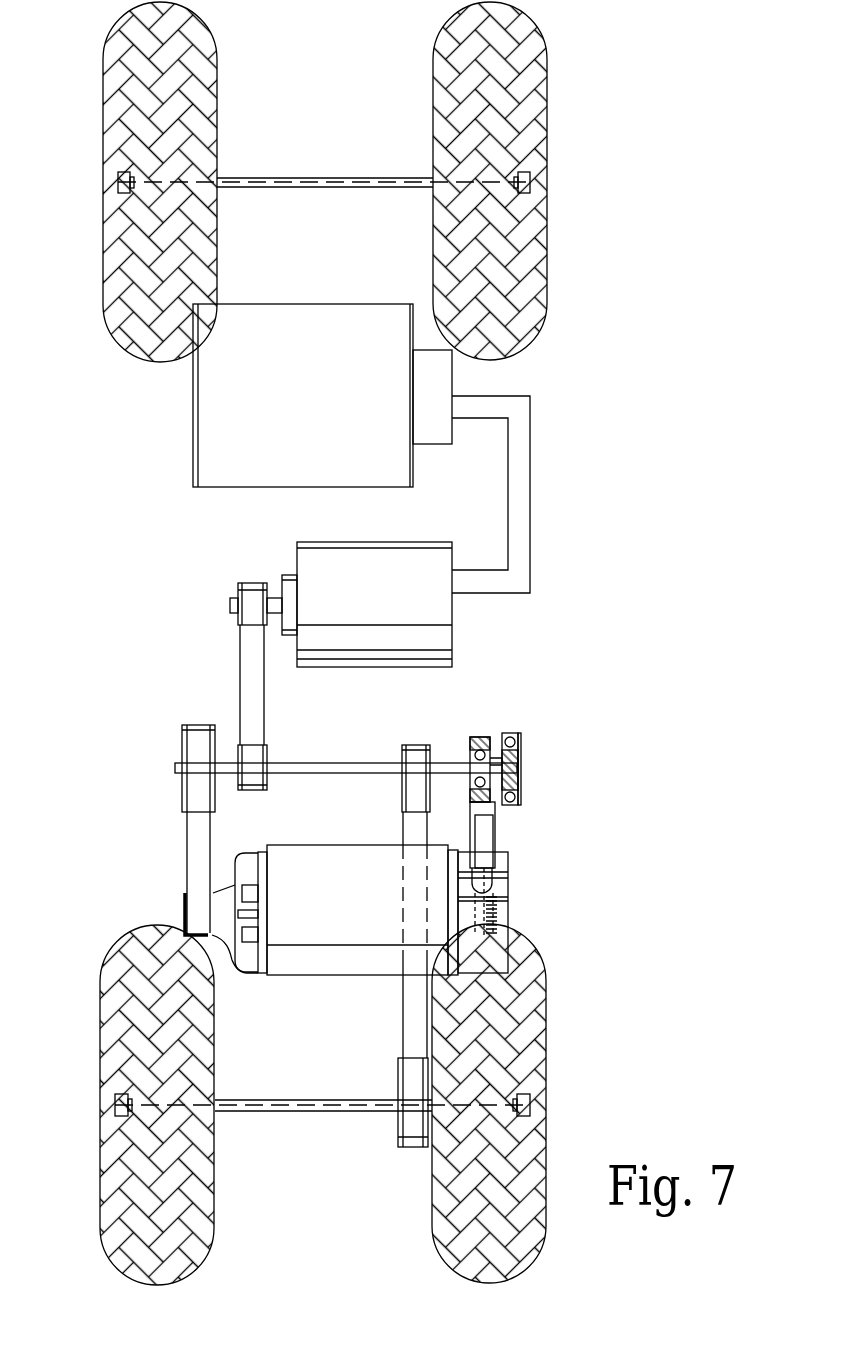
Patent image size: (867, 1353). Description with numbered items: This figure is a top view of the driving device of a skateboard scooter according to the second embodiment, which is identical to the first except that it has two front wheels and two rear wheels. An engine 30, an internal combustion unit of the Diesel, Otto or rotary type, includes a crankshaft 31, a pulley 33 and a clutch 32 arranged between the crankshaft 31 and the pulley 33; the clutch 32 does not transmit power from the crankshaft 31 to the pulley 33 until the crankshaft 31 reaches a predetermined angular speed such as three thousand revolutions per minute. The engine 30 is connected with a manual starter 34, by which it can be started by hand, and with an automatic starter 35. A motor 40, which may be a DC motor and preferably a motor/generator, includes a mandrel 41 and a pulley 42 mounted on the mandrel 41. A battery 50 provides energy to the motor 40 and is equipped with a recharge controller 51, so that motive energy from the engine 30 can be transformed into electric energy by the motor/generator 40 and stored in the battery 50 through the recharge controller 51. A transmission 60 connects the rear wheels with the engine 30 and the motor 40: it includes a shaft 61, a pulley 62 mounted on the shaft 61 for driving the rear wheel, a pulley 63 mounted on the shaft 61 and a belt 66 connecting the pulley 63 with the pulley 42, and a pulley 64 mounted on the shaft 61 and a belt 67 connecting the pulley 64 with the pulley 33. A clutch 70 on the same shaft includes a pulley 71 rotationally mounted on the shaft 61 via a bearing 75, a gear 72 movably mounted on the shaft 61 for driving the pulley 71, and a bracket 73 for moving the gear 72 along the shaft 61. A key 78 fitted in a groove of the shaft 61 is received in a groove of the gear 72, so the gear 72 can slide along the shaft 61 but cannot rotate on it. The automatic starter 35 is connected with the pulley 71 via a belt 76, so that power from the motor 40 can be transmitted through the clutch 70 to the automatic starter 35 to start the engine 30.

The engine 30 is at (437, 975).
The crankshaft 31 is at (252, 913).
The clutch 32 is at (235, 900).
The pulley 33 is at (185, 912).
The manual starter 34 is at (491, 850).
The automatic starter 35 is at (497, 932).
The motor 40 is at (323, 560).
The mandrel 41 is at (230, 600).
The pulley 42 is at (238, 620).
The battery 50 is at (213, 443).
The recharge controller 51 is at (423, 372).
The transmission 60 is at (167, 738).
The shaft 61 is at (329, 763).
The pulley 62 is at (402, 753).
The pulley 63 is at (268, 752).
The pulley 64 is at (182, 787).
The belt 66 is at (253, 697).
The belt 67 is at (194, 855).
The clutch 70 is at (531, 718).
The pulley 71 is at (472, 748).
The gear 72 is at (500, 748).
The bracket 73 is at (513, 732).
The bearing 75 is at (476, 753).
The belt 76 is at (482, 812).
The key 78 is at (521, 764).